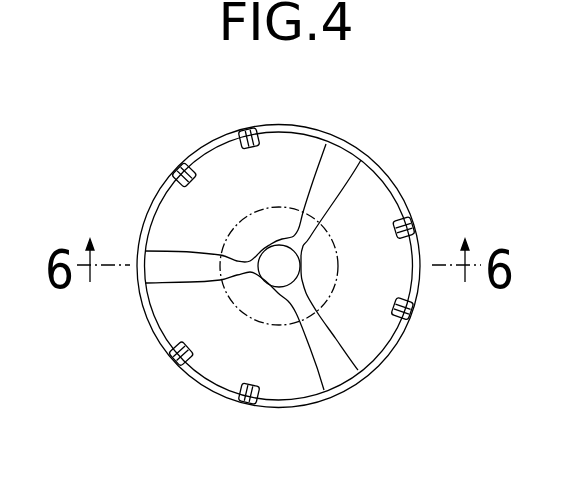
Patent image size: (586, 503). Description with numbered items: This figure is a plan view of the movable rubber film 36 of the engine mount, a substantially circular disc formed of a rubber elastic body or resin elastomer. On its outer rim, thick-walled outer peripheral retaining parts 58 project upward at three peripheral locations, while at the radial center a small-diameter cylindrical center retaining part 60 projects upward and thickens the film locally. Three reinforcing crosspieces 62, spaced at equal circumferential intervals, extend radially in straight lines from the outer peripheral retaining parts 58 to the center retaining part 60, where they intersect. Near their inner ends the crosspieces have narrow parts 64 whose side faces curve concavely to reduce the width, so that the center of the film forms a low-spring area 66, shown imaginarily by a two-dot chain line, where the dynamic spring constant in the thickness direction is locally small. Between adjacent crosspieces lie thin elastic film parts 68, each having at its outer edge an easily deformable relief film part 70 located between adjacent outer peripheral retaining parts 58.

The movable rubber film 36 is at (374, 118).
The outer peripheral retaining parts 58 is at (380, 168).
The center retaining part 60 is at (277, 273).
The reinforcing crosspieces 62 is at (327, 182).
The narrow parts 64 is at (298, 239).
The low-spring area 66 is at (245, 217).
The elastic film parts 68 is at (190, 214).
The relief film parts 70 is at (205, 153).